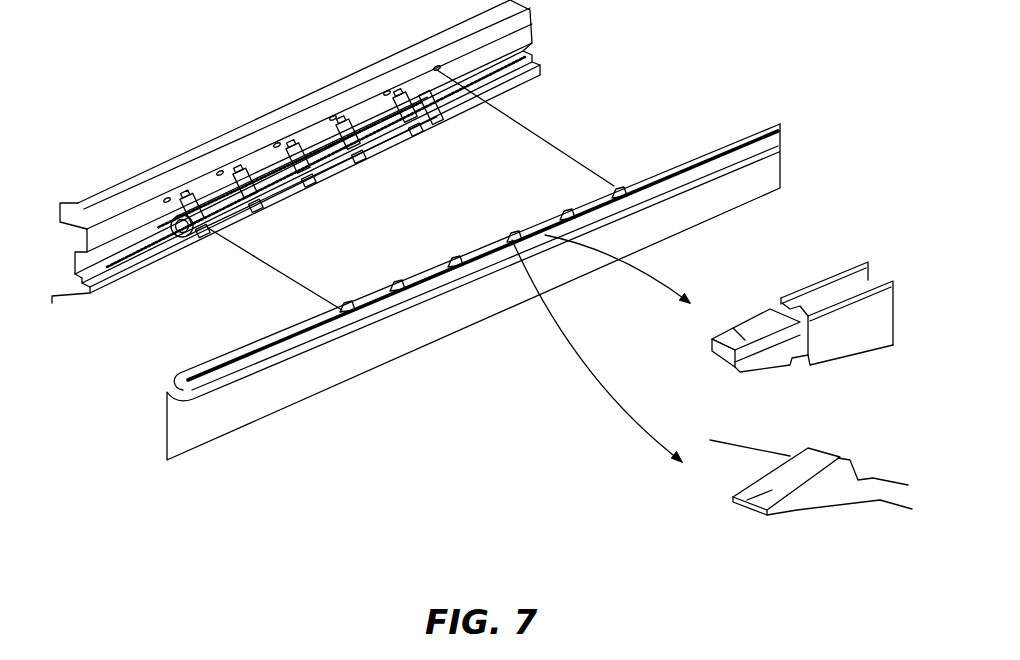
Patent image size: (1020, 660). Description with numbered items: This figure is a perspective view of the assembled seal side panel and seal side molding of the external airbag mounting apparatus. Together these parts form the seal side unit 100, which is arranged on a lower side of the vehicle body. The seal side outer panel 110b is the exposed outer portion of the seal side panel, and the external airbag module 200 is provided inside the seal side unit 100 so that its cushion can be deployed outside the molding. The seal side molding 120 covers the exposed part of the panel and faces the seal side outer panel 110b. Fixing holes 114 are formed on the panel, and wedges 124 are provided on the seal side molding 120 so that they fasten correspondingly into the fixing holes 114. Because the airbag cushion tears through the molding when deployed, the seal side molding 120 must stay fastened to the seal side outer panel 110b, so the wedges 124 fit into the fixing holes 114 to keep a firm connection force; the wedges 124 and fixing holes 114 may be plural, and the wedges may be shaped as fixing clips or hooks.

The seal side outer panel 110b is at (95, 215).
The fixing holes 114 is at (217, 173).
The external airbag module 200 is at (441, 133).
The seal side unit 100 is at (384, 410).
The seal side molding 120 is at (248, 402).
The wedges 124 is at (424, 284).